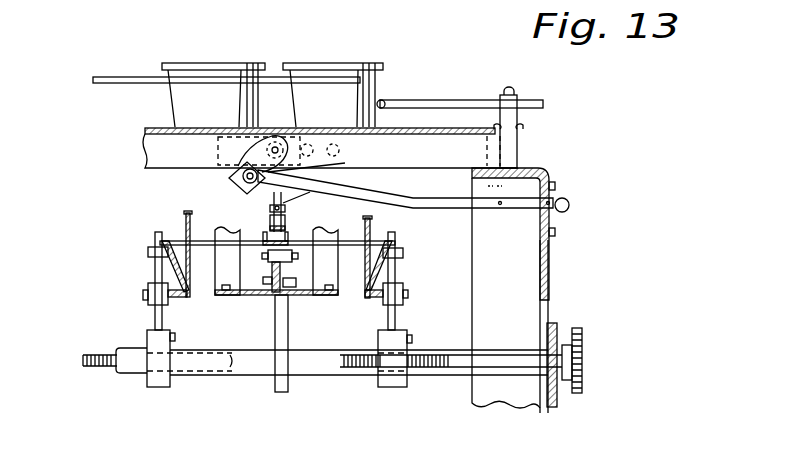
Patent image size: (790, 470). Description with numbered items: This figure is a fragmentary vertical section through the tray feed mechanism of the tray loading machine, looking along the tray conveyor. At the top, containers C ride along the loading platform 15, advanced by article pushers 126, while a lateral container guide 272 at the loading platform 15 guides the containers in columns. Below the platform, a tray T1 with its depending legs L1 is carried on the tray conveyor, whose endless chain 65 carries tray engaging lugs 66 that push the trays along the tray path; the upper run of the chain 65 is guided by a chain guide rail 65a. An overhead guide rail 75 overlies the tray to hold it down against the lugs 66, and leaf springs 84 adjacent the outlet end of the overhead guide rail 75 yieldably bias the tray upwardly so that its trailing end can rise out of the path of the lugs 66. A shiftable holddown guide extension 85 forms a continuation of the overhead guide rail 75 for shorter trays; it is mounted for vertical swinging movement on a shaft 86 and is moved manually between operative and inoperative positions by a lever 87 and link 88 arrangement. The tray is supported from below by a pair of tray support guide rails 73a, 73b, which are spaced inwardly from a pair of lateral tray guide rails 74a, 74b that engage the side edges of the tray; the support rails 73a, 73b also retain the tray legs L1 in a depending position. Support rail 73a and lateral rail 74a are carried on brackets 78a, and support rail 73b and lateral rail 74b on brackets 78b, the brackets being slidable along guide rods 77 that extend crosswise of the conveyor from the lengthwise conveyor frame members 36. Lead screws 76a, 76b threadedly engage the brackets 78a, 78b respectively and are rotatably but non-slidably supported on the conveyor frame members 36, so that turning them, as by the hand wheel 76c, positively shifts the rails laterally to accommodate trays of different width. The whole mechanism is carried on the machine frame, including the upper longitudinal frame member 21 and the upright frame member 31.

The article pusher 126 is at (131, 77).
The container C is at (320, 63).
The lateral container guide 272 is at (384, 100).
The loading platform 15 is at (427, 120).
The holddown guide extension 85 is at (218, 154).
The shaft 86 is at (279, 146).
The lever 87 is at (235, 168).
The link 88 is at (383, 190).
The upper longitudinal frame member 21 is at (538, 165).
The upright frame member 31 is at (548, 264).
The conveyor frame member 36 is at (557, 400).
The hand wheel 76c is at (582, 333).
The lead screw 76a is at (480, 358).
The guide rod 77 is at (316, 358).
The lead screw 76b is at (95, 366).
The lateral tray guide rail 74b is at (158, 236).
The tray leg L1 is at (150, 258).
The bracket 78b is at (152, 316).
The tray T1 is at (187, 224).
The tray support guide rail 73b is at (192, 284).
The lateral tray guide rail 74a is at (398, 238).
The bracket 78a is at (397, 318).
The tray support guide rail 73a is at (364, 282).
The overhead guide rail 75 is at (256, 212).
The tray engaging lug 66 is at (293, 241).
The endless chain 65 is at (262, 272).
The chain guide rail 65a is at (273, 295).
The leaf spring 84 is at (323, 266).